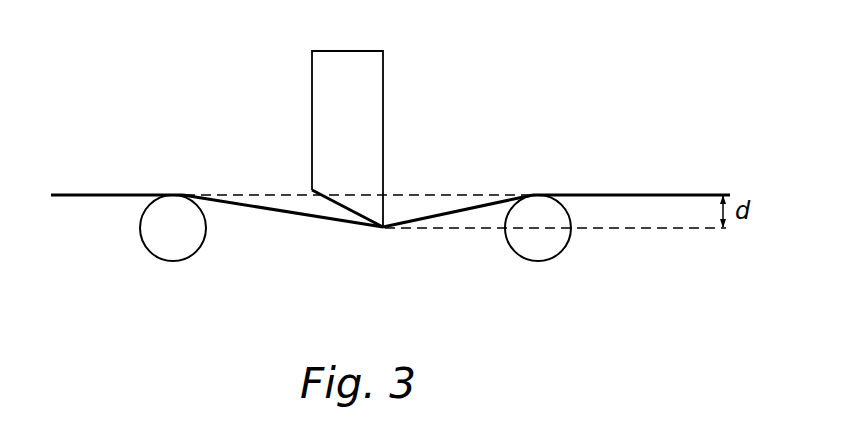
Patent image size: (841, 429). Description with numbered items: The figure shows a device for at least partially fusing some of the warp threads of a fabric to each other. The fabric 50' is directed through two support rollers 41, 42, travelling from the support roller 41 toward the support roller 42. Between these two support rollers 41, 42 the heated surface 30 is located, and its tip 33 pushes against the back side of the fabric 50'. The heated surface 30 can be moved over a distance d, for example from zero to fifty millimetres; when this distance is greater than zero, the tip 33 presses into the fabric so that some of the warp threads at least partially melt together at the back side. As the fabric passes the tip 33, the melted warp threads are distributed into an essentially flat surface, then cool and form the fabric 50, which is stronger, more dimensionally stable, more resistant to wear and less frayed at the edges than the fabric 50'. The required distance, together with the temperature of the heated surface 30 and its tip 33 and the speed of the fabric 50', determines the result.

The heated surface 30 is at (383, 73).
The tip of the heated surface 33 is at (383, 228).
The support roller 41 is at (566, 250).
The support roller 42 is at (142, 250).
The fabric 50 is at (217, 168).
The fabric 50' is at (556, 167).